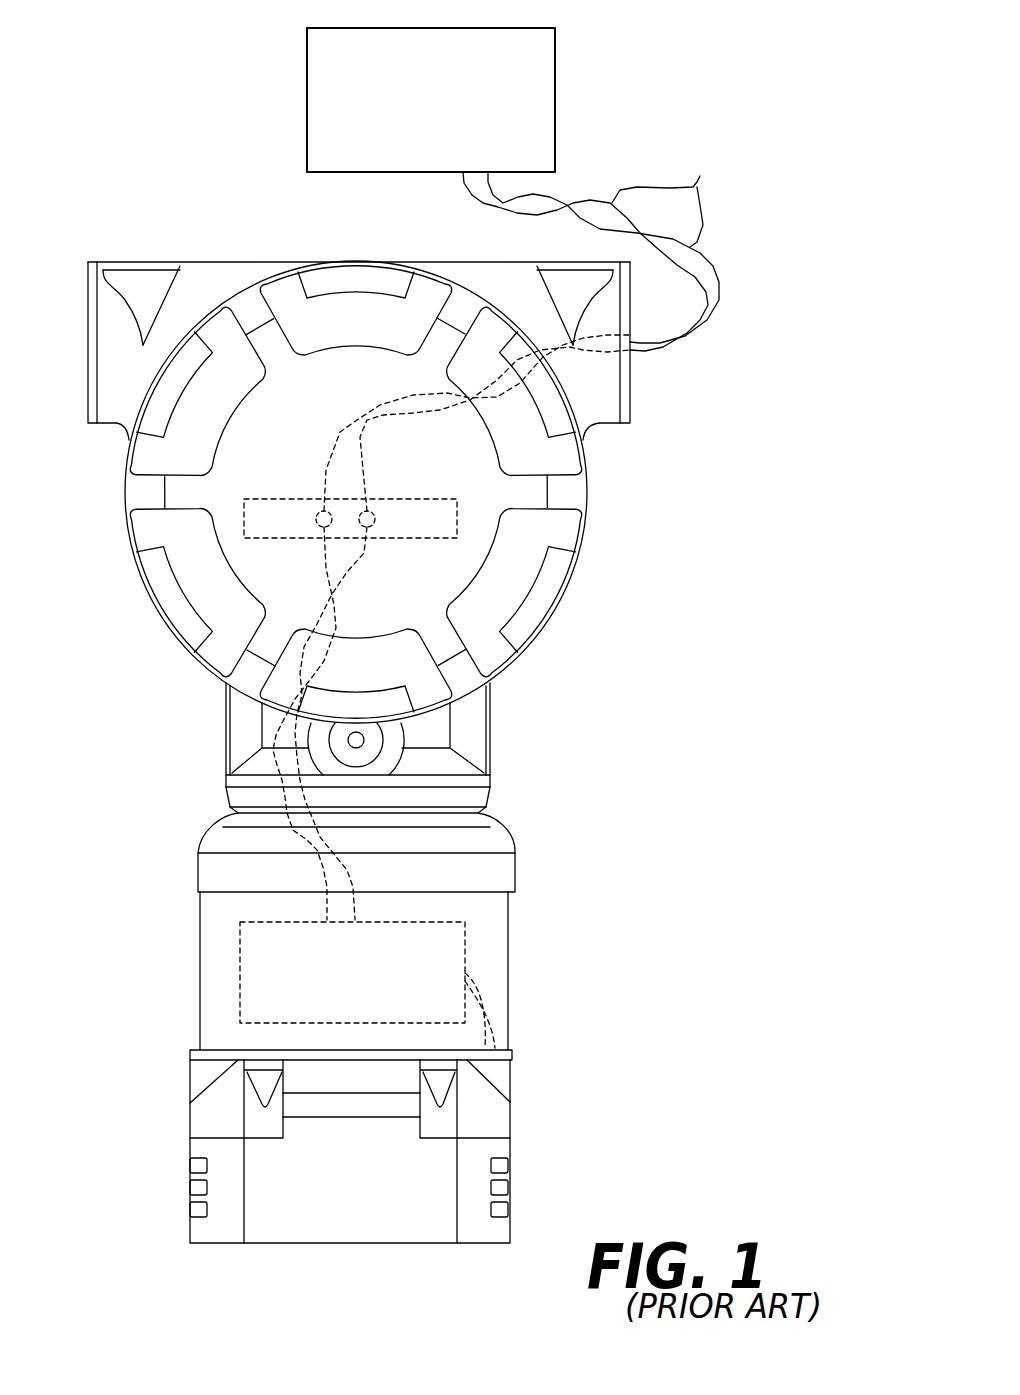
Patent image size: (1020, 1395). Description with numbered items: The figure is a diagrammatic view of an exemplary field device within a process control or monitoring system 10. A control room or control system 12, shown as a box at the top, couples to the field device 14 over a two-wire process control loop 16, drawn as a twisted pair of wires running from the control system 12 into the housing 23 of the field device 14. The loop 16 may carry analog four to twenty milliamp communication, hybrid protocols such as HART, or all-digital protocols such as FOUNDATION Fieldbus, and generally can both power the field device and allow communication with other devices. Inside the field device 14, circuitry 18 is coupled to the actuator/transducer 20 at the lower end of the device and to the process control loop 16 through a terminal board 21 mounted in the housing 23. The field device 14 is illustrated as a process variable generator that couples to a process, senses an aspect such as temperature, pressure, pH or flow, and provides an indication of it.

The process control or monitoring system 10 is at (213, 173).
The control system 12 is at (555, 97).
The field device 14 is at (183, 956).
The two-wire process control loop 16 is at (598, 249).
The circuitry 18 is at (465, 950).
The actuator/transducer 20 is at (513, 1140).
The terminal board 21 is at (429, 545).
The housing 23 is at (589, 490).